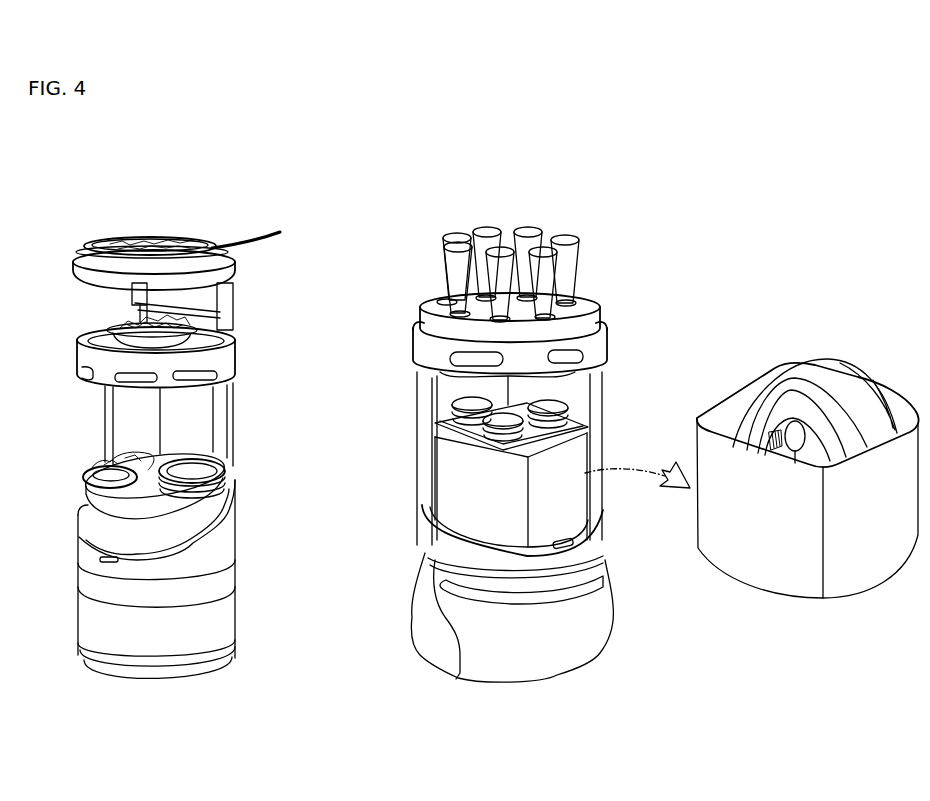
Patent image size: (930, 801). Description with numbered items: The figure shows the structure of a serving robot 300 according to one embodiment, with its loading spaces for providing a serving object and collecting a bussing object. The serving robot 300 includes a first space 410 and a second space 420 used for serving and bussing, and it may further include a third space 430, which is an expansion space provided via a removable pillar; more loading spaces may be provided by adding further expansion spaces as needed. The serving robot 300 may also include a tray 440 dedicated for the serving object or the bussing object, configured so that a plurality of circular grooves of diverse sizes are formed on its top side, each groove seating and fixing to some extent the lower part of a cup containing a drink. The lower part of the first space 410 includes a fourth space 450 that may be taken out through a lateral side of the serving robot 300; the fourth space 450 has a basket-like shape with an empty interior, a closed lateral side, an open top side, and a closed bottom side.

The serving robot 300 is at (87, 150).
The third space 430 is at (225, 268).
The second space 420 is at (225, 365).
The first space 410 is at (218, 500).
The tray 440 is at (433, 318).
The fourth space 450 is at (458, 493).